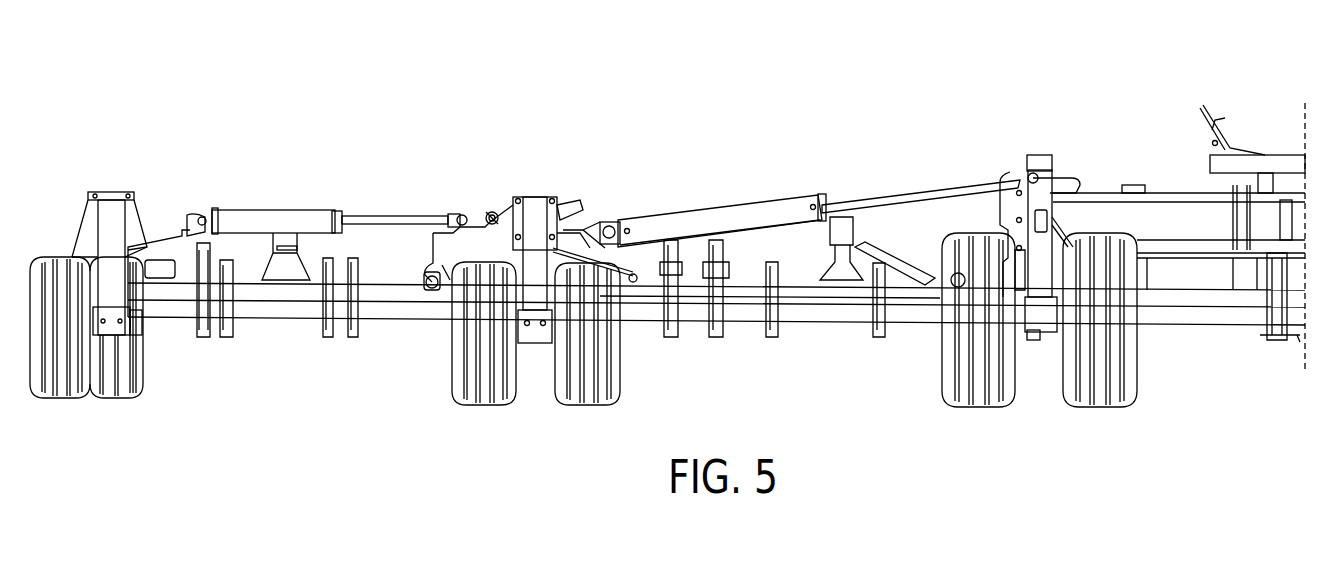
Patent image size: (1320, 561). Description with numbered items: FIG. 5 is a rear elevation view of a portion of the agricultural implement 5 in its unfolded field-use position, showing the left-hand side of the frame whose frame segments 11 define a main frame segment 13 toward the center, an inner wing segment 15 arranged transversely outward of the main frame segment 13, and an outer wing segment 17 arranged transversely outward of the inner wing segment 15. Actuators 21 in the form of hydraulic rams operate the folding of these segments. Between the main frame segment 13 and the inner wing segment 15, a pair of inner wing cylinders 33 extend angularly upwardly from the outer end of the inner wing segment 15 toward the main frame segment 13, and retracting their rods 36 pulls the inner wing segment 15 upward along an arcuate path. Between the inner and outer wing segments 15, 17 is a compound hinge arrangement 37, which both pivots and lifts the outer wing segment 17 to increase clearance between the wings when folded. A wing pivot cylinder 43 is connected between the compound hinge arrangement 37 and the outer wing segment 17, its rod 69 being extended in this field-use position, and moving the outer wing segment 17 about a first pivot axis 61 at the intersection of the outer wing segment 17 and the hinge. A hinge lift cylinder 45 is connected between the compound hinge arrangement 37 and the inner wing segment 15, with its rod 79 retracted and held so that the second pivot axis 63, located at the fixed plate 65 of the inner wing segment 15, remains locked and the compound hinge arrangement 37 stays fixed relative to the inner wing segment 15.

The agricultural implement 5 is at (1133, 67).
The frame segments 11 is at (217, 137).
The main frame segment 13 is at (1272, 145).
The inner wing segment 15 is at (660, 155).
The outer wing segment 17 is at (255, 255).
The actuators 21 is at (286, 213).
The inner wing cylinders 33 is at (790, 210).
The rods 36 is at (930, 190).
The compound hinge arrangement 37 is at (480, 215).
The wing pivot cylinder 43 is at (334, 213).
The hinge lift cylinder 45 is at (620, 272).
The first pivot axis 61 is at (440, 288).
The second pivot axis 63 is at (497, 212).
The fixed plate 65 is at (536, 210).
The rod 69 is at (388, 216).
The rod 79 is at (548, 255).